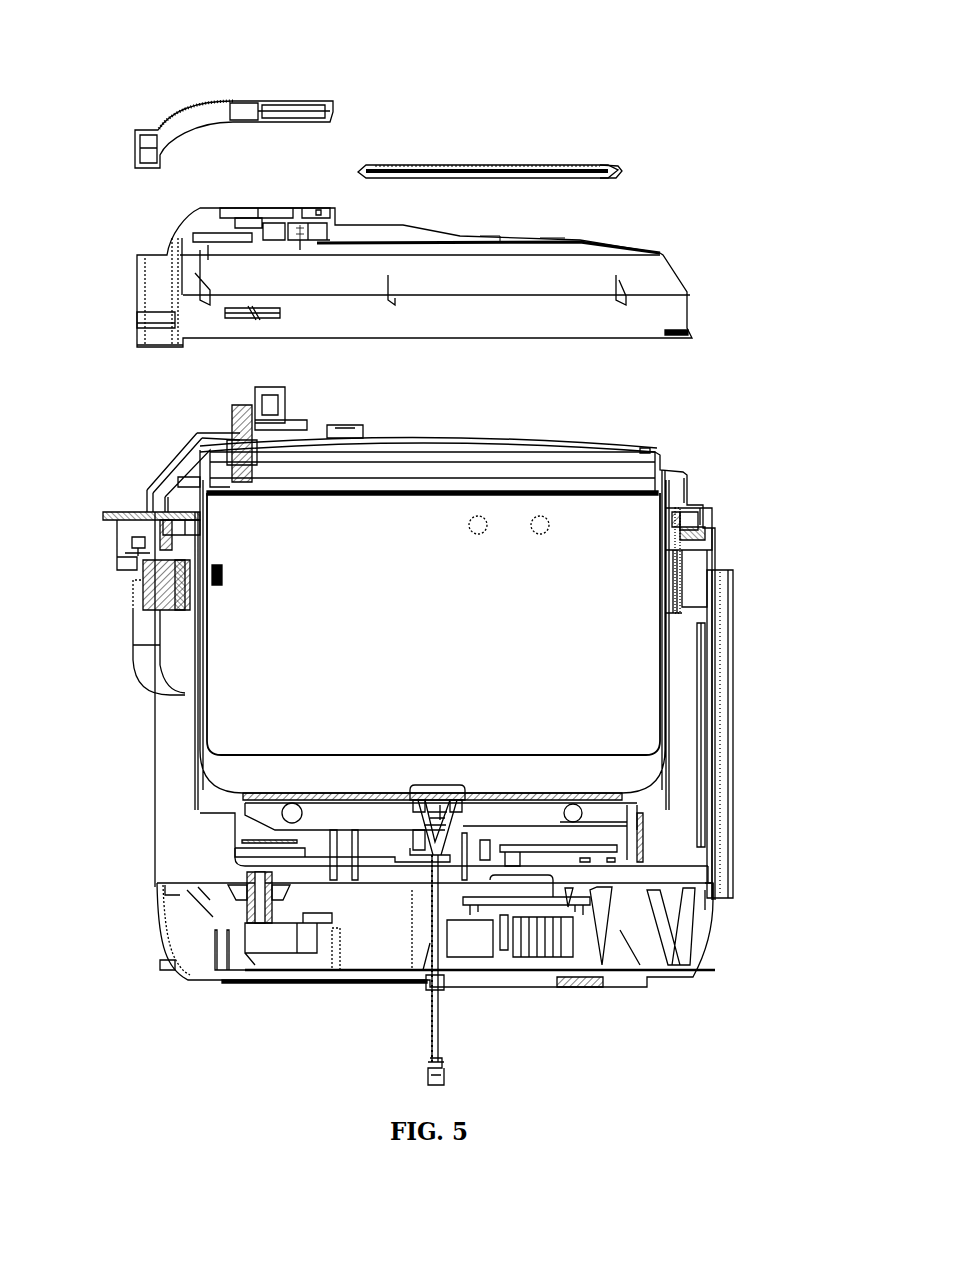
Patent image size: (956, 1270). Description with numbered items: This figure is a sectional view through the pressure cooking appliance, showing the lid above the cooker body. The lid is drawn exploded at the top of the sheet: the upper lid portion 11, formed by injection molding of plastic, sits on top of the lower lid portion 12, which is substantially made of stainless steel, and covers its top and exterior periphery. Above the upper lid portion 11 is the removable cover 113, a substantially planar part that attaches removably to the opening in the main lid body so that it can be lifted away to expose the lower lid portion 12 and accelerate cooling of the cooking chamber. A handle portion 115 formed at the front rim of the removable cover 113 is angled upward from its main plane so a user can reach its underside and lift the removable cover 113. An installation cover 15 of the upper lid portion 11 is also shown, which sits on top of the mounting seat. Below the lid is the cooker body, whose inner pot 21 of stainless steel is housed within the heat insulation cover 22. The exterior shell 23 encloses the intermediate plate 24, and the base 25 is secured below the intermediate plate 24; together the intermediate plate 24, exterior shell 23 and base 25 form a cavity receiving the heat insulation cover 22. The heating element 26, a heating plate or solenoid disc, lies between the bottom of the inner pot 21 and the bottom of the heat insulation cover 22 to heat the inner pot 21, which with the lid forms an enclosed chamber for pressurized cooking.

The upper lid portion 11 is at (471, 274).
The lower lid portion 12 is at (509, 441).
The installation cover 15 is at (224, 85).
The inner pot 21 is at (507, 630).
The heat insulation cover 22 is at (751, 734).
The exterior shell 23 is at (377, 666).
The intermediate plate 24 is at (114, 628).
The base 25 is at (494, 929).
The heating element 26 is at (533, 935).
The removable cover 113 is at (498, 131).
The handle portion 115 is at (716, 131).